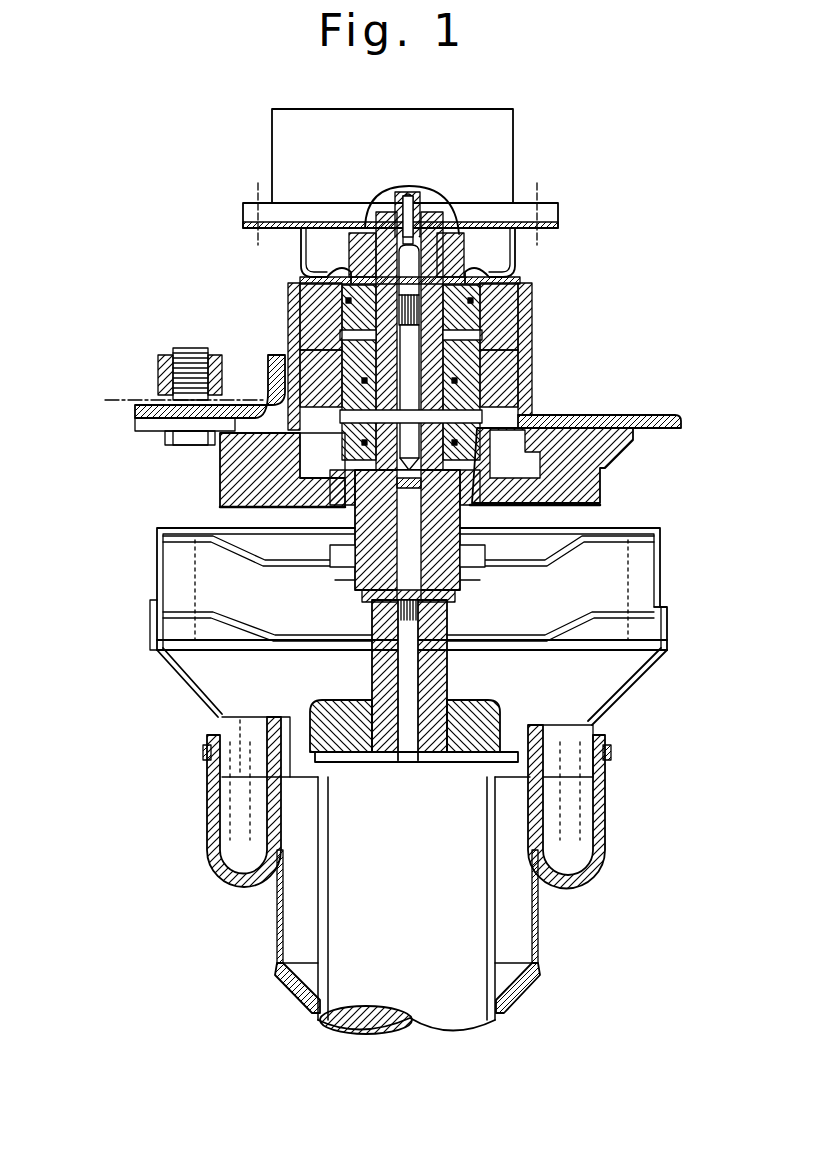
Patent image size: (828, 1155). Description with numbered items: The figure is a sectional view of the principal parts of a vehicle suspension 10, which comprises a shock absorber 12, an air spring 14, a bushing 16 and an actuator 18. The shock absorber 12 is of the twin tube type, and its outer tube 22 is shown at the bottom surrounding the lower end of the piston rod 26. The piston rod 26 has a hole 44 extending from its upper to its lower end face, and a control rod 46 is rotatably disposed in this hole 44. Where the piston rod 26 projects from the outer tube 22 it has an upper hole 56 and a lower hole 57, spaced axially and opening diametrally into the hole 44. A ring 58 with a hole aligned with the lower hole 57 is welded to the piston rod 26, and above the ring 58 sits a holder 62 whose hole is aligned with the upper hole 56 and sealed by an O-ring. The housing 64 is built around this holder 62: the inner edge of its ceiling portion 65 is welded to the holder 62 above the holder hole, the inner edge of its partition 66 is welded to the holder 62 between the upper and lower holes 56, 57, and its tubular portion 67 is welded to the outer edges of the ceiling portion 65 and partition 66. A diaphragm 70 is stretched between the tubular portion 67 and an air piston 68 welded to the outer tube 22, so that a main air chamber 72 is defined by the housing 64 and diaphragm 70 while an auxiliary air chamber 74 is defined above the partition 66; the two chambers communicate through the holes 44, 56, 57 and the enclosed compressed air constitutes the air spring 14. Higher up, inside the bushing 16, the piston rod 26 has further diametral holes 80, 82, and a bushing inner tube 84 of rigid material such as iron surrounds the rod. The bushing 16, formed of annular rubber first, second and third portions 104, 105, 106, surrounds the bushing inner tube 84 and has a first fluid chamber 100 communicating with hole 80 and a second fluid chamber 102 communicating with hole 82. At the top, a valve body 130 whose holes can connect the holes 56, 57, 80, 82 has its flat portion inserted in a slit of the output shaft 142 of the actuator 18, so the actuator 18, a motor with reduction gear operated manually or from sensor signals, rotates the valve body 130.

The suspension 10 is at (128, 345).
The shock absorber 12 is at (308, 896).
The air spring 14 is at (180, 706).
The bushing 16 is at (303, 272).
The actuator 18 is at (272, 160).
The outer tube 22 is at (468, 982).
The piston rod 26 is at (372, 676).
The hole 44 is at (397, 765).
The control rod 46 is at (416, 770).
The upper hole 56 is at (438, 550).
The lower hole 57 is at (447, 652).
The ring 58 is at (467, 578).
The holder 62 is at (467, 521).
The housing 64 is at (152, 567).
The ceiling portion 65 is at (200, 528).
The partition 66 is at (250, 633).
The tubular portion 67 is at (213, 718).
The air piston 68 is at (277, 933).
The diaphragm 70 is at (207, 827).
The main air chamber 72 is at (598, 677).
The auxiliary air chamber 74 is at (625, 570).
The hole 80 is at (515, 293).
The hole 82 is at (518, 360).
The bushing inner tube 84 is at (352, 352).
The first fluid chamber 100 is at (500, 342).
The second fluid chamber 102 is at (510, 432).
The first portion 104 is at (292, 306).
The second portion 105 is at (297, 393).
The third portion 106 is at (230, 452).
The valve body 130 is at (445, 222).
The output shaft 142 is at (403, 196).